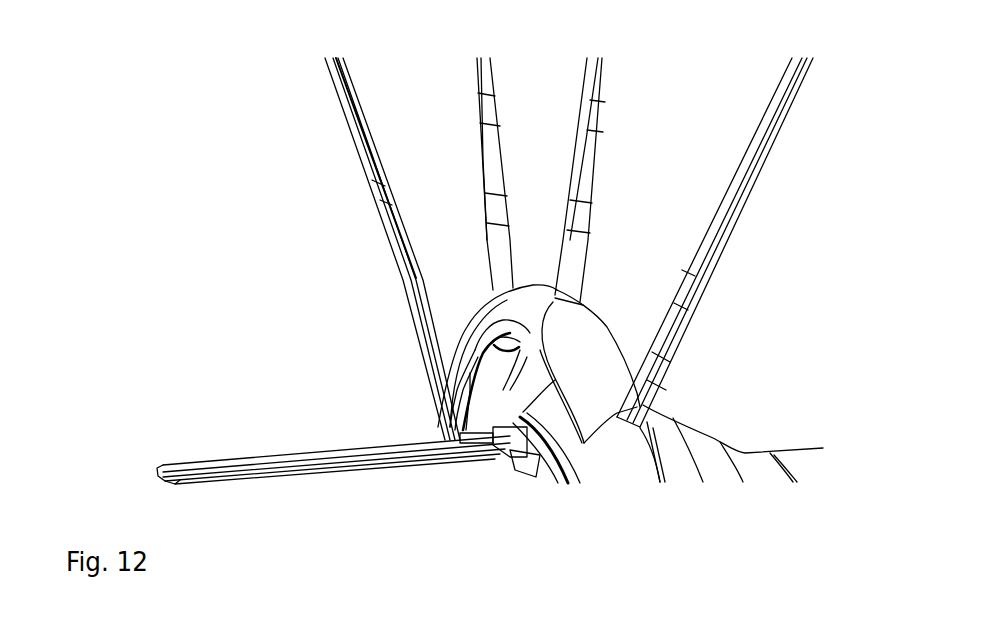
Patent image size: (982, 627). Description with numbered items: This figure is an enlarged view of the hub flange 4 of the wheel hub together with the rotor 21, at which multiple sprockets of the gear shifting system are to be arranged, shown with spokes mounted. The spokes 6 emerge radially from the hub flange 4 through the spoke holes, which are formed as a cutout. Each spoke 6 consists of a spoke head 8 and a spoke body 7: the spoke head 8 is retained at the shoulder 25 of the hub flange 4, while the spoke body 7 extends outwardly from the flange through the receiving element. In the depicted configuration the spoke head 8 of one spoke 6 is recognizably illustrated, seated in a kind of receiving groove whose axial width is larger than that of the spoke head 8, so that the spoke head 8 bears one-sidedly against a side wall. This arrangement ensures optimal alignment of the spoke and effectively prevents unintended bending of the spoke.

The hub flange 4 is at (605, 320).
The spoke 6 is at (586, 170).
The spoke body 7 is at (747, 203).
The spoke head 8 is at (478, 370).
The rotor 21 is at (228, 473).
The shoulder 25 is at (478, 400).